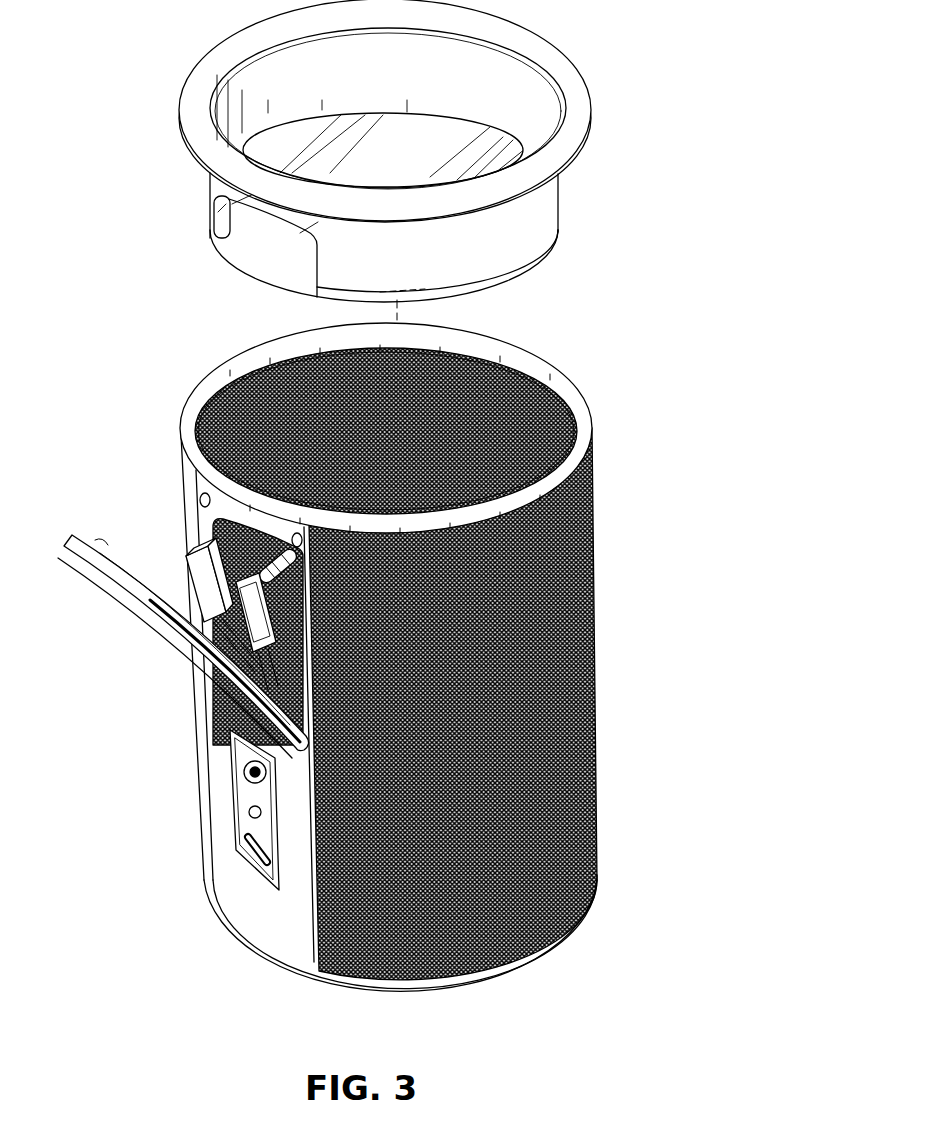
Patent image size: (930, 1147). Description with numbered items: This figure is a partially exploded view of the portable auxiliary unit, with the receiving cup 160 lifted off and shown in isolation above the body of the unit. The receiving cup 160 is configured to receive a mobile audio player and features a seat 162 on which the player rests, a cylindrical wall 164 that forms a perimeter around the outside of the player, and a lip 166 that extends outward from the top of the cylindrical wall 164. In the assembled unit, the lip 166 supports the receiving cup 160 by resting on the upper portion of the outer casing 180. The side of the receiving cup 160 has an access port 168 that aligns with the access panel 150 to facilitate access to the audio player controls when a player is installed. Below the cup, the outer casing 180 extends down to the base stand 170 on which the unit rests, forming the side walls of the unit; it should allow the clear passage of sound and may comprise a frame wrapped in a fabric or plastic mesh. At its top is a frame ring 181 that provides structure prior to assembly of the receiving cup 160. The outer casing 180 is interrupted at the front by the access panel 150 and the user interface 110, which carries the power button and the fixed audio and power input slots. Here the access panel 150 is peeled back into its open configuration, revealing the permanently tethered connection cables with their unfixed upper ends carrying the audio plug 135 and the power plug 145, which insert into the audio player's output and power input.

The user interface 110 is at (248, 857).
The audio plug 135 is at (247, 617).
The power plug 145 is at (190, 570).
The access panel 150 is at (172, 620).
The receiving cup 160 is at (411, 161).
The seat 162 is at (414, 154).
The cylindrical wall 164 is at (414, 84).
The lip 166 is at (545, 36).
The access port 168 is at (226, 228).
The base stand 170 is at (523, 950).
The outer casing 180 is at (597, 622).
The frame ring 181 is at (565, 372).